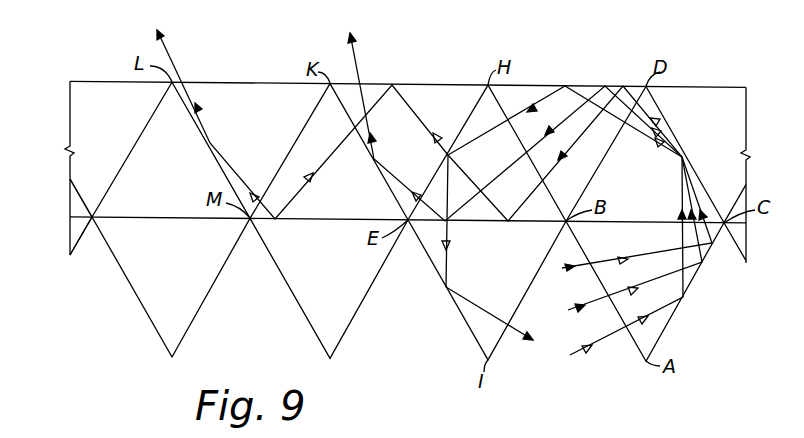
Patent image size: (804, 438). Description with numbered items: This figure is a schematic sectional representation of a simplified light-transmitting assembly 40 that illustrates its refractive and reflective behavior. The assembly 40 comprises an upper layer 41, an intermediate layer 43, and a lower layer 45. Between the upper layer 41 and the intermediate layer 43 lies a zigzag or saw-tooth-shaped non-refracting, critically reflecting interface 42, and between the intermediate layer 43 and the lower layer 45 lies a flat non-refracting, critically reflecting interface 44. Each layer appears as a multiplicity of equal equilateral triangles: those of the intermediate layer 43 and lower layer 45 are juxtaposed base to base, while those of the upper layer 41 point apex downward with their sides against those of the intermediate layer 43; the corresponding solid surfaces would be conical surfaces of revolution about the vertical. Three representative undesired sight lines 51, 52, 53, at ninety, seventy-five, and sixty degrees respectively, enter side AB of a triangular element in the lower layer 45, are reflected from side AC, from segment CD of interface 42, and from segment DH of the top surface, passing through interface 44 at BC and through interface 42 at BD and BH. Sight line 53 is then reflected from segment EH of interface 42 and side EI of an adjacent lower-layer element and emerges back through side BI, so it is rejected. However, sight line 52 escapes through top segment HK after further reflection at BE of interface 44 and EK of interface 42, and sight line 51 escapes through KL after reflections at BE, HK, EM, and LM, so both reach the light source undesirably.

The light-transmitting assembly 40 is at (53, 247).
The upper layer 41 is at (68, 110).
The zigzag interface 42 is at (72, 183).
The intermediate layer 43 is at (68, 200).
The flat interface 44 is at (75, 222).
The lower layer 45 is at (65, 242).
The sight line 51 is at (175, 58).
The sight line 52 is at (356, 58).
The sight line 53 is at (575, 353).